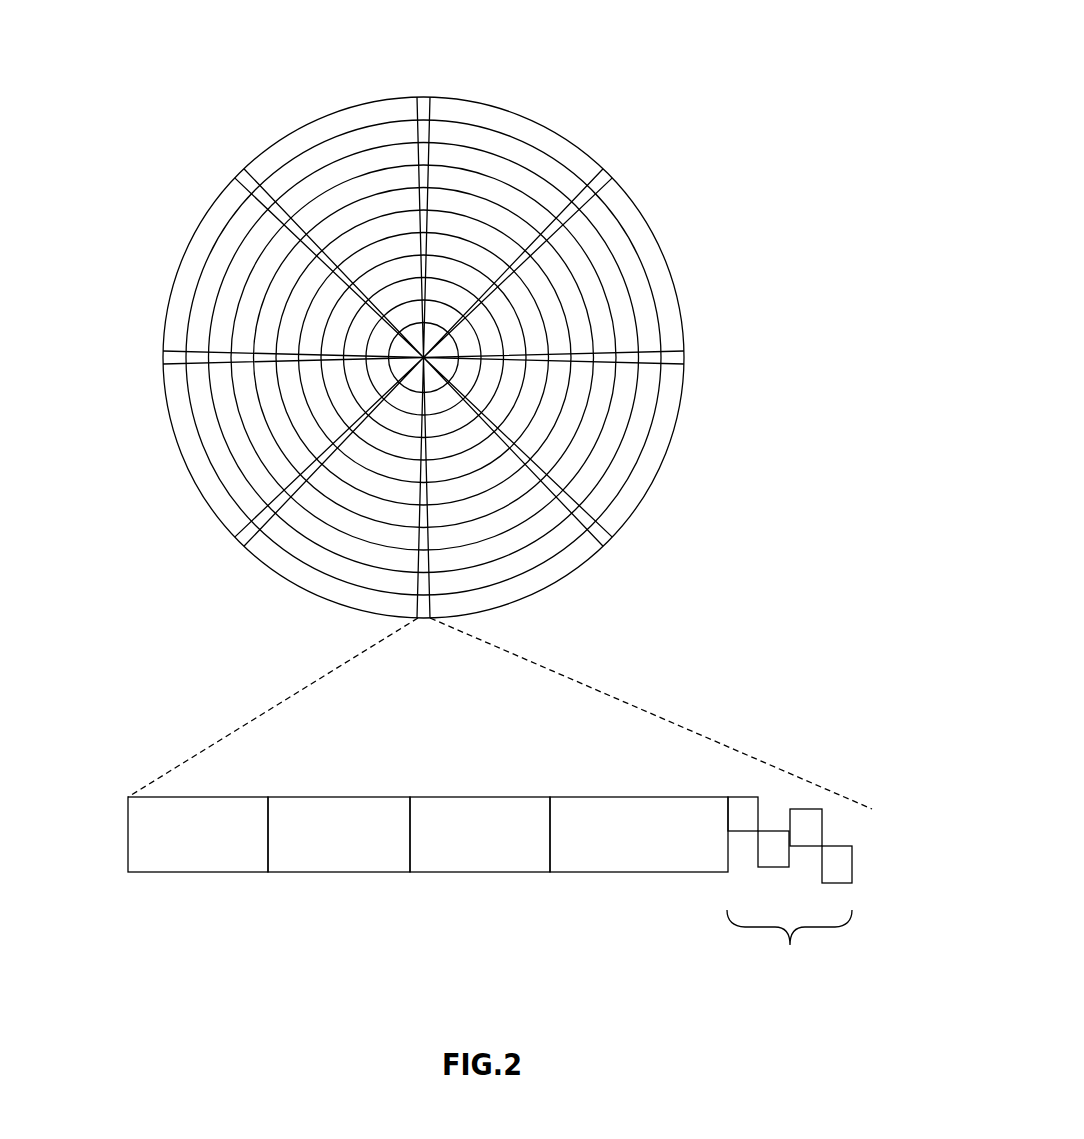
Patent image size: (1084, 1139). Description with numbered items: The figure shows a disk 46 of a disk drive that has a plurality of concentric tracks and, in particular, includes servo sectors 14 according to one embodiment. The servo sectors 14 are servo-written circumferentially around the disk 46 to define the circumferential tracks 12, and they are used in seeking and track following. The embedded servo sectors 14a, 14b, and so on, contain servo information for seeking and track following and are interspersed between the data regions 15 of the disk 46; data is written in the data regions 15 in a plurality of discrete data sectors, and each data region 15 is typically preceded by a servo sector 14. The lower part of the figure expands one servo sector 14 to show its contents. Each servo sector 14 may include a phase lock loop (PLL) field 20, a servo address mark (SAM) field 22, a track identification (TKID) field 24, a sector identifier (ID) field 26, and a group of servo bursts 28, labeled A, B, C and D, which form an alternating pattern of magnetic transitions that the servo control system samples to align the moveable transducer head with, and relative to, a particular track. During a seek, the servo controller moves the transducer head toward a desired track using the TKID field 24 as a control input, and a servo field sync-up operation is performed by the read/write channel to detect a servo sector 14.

The disk 46 is at (256, 73).
The circumferential tracks 12 is at (204, 256).
The servo sectors 14 is at (425, 102).
The embedded servo sector 14a is at (242, 177).
The embedded servo sector 14b is at (170, 358).
The data regions 15 is at (490, 138).
The phase lock loop (PLL) field 20 is at (148, 874).
The servo address mark (SAM) field 22 is at (290, 874).
The track identification (TKID) field 24 is at (432, 874).
The sector identifier (ID) field 26 is at (578, 874).
The servo bursts 28 is at (731, 781).